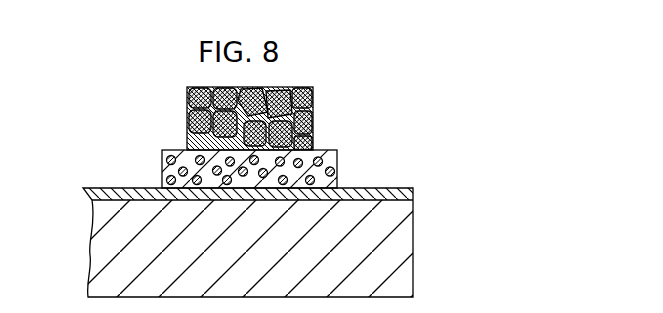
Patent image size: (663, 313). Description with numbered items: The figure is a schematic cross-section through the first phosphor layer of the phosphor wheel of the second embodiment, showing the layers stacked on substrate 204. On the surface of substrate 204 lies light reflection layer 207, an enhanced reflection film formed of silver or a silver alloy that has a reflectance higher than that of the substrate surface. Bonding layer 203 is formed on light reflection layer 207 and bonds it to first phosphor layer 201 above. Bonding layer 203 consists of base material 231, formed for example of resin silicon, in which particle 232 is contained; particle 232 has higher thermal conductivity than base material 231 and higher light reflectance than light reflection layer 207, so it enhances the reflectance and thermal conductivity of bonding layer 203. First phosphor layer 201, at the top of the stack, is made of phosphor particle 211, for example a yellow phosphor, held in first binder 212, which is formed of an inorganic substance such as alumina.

The first phosphor layer 201 is at (240, 118).
The phosphor particle 211 is at (250, 119).
The first binder 212 is at (313, 125).
The bonding layer 203 is at (243, 156).
The base material 231 is at (162, 171).
The particle 232 is at (162, 158).
The light reflection layer 207 is at (415, 197).
The substrate 204 is at (395, 243).